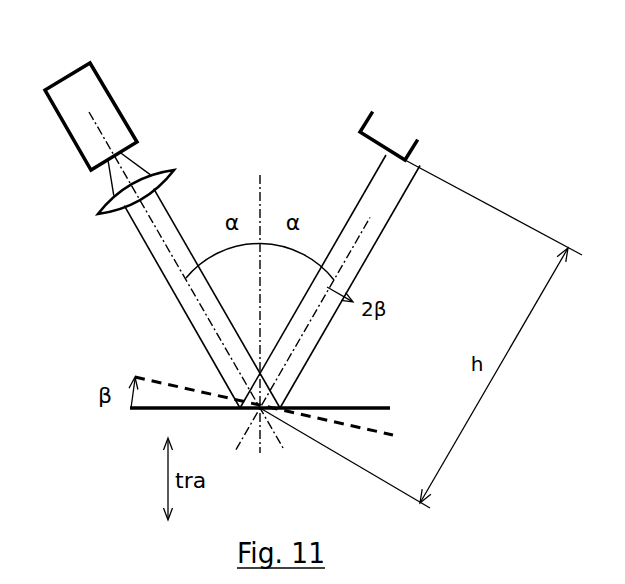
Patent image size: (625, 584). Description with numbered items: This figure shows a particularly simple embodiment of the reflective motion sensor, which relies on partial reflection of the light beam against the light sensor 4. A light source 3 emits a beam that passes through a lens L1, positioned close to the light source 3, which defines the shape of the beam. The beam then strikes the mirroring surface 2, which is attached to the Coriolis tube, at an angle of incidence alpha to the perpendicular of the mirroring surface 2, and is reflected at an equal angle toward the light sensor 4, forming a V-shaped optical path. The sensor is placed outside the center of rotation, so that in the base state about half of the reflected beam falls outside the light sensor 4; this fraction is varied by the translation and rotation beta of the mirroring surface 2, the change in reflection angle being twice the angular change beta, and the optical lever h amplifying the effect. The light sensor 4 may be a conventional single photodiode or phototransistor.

The mirroring surface 2 is at (363, 408).
The light source 3 is at (70, 98).
The light sensor 4 is at (390, 130).
The lens L1 is at (111, 199).